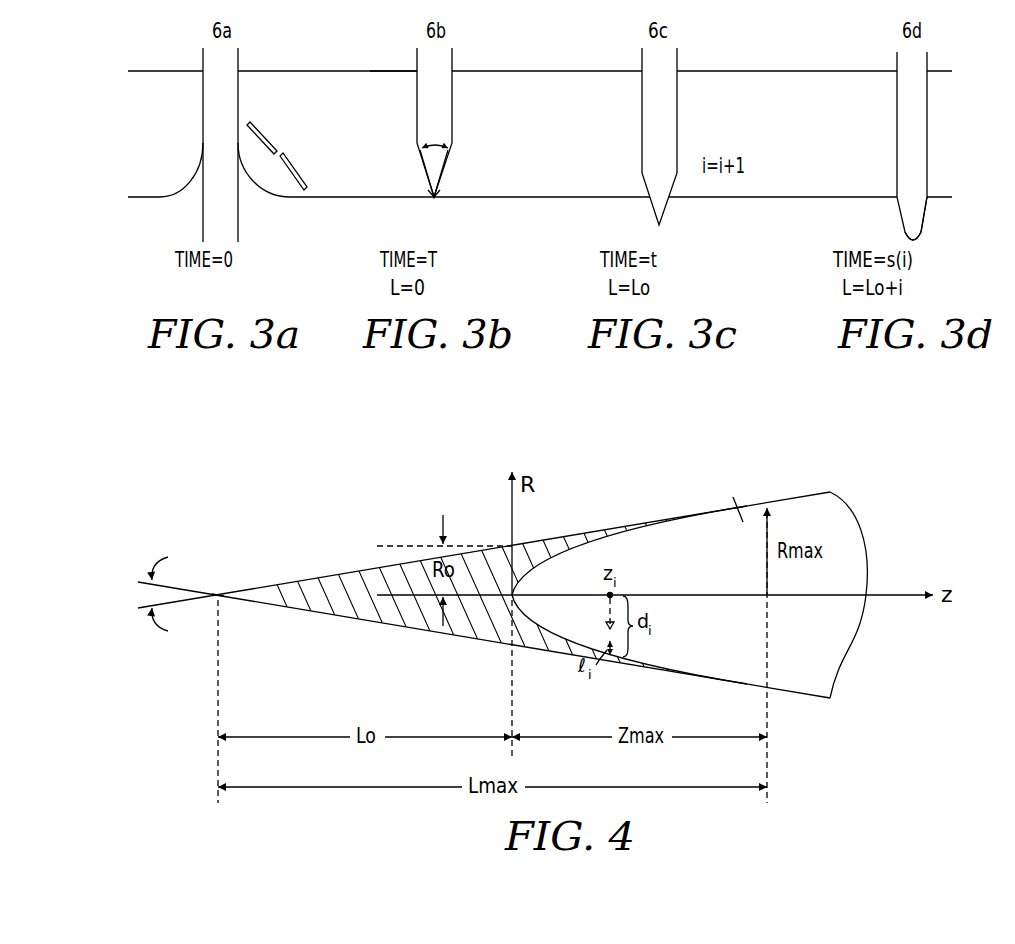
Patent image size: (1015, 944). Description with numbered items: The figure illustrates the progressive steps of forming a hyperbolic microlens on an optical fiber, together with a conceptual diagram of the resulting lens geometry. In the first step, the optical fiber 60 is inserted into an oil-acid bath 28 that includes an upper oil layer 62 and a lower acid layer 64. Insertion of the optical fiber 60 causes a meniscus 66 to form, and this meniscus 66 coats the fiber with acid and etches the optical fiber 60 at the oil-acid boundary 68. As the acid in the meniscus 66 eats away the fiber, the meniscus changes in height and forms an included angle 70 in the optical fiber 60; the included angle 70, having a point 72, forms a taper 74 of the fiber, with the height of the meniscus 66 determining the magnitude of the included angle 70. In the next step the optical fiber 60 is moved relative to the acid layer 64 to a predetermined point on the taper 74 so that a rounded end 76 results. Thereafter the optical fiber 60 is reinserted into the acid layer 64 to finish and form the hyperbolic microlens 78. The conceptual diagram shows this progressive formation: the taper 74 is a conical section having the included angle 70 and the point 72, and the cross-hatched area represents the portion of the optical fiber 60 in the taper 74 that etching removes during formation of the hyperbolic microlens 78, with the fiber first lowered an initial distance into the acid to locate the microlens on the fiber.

In FIG. 3B, the oil-acid bath 28 is at (391, 56).
In FIG. 3A, the optical fiber 60 is at (203, 100).
In FIG. 3B, the optical fiber 60 is at (452, 103).
In FIG. 3C, the optical fiber 60 is at (677, 103).
In FIG. 3D, the optical fiber 60 is at (927, 105).
In FIG. 3A, the oil layer 62 is at (359, 121).
In FIG. 3B, the oil layer 62 is at (583, 121).
In FIG. 3C, the oil layer 62 is at (835, 121).
In FIG. 3A, the acid layer 64 is at (343, 234).
In FIG. 3B, the acid layer 64 is at (565, 234).
In FIG. 3C, the acid layer 64 is at (816, 234).
In FIG. 3A, the meniscus 66 is at (283, 143).
In FIG. 3A, the oil-acid boundary 68 is at (257, 188).
In FIG. 3B, the included angle 70 is at (455, 137).
In FIG. 4, the included angle 70 is at (163, 598).
In FIG. 3B, the point 72 is at (434, 197).
In FIG. 4, the point 72 is at (221, 591).
In FIG. 3B, the taper 74 is at (452, 174).
In FIG. 4, the taper 74 is at (545, 523).
In FIG. 3D, the rounded end 76 is at (922, 250).
In FIG. 4, the rounded end 76 is at (516, 592).
In FIG. 3D, the hyperbolic microlens 78 is at (934, 223).
In FIG. 4, the hyperbolic microlens 78 is at (734, 494).